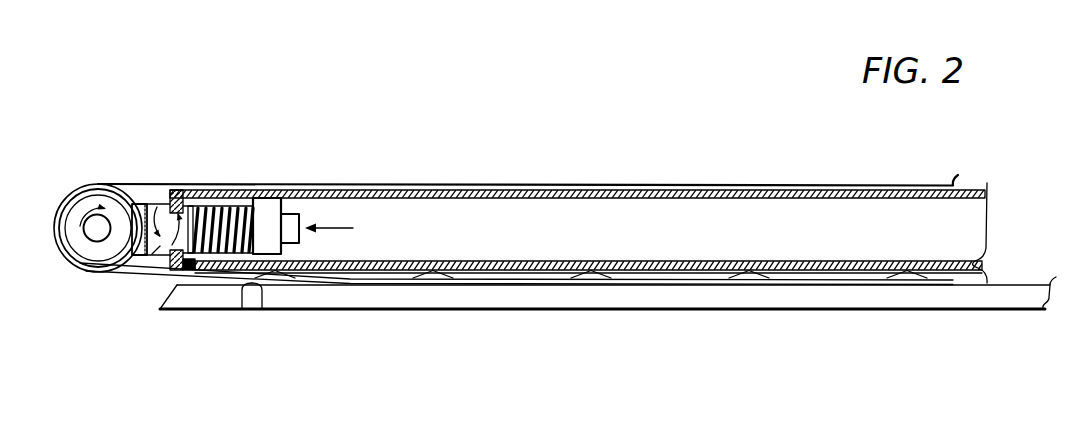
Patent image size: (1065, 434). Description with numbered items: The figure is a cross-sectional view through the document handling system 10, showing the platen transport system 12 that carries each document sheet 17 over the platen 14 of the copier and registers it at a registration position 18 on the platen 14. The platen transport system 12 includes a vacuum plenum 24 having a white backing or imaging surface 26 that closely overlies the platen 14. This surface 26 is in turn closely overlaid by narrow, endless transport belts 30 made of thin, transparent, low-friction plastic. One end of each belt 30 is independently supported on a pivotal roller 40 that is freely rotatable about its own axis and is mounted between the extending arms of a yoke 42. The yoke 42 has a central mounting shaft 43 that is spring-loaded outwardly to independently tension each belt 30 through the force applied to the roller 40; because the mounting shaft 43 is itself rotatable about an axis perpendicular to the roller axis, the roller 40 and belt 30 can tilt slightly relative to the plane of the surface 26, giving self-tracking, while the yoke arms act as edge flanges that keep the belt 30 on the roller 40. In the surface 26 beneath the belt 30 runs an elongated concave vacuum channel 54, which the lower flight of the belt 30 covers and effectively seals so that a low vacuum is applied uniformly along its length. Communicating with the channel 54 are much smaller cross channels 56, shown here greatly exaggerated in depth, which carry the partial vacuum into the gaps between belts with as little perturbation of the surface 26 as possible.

The document handling system 10 is at (348, 172).
The platen transport system 12 is at (395, 232).
The platen 14 is at (378, 297).
The document sheet 17 is at (262, 309).
The registration position 18 is at (242, 309).
The vacuum plenum 24 is at (605, 227).
The imaging surface 26 is at (547, 271).
The transport belt 30 is at (90, 268).
The pivotal roller 40 is at (80, 202).
The yoke 42 is at (135, 203).
The mounting shaft 43 is at (187, 201).
The vacuum channel 54 is at (467, 272).
The cross channel 56 is at (738, 290).